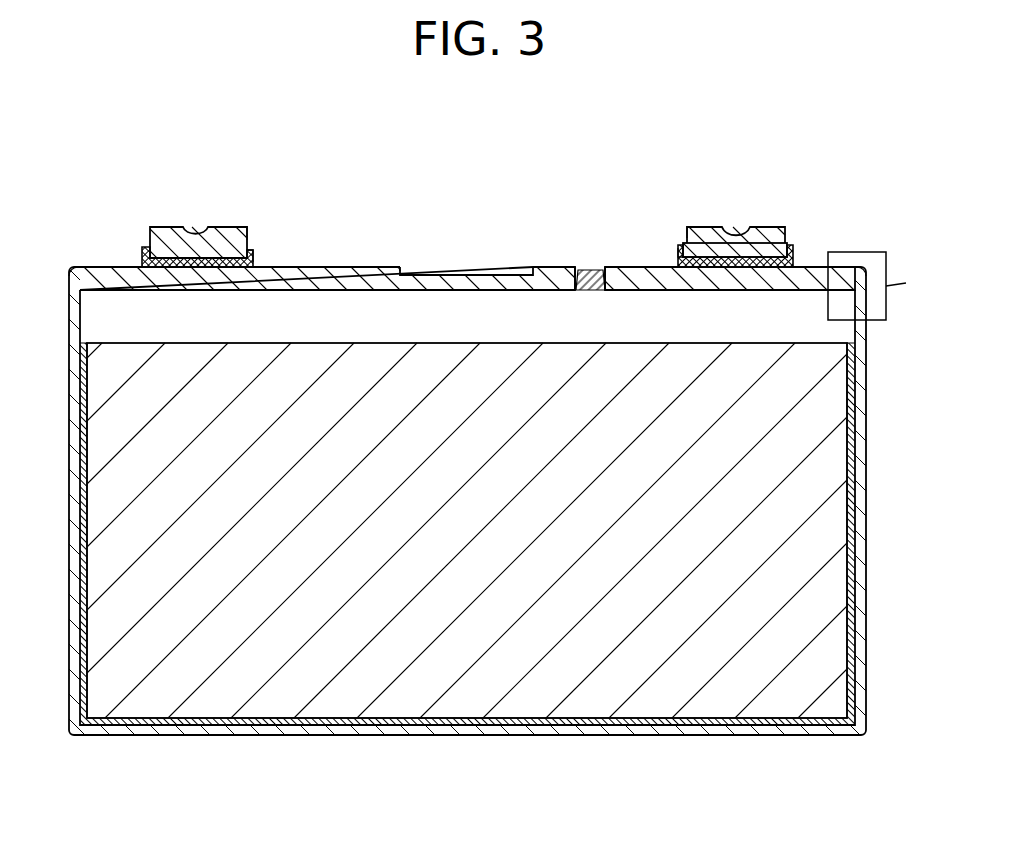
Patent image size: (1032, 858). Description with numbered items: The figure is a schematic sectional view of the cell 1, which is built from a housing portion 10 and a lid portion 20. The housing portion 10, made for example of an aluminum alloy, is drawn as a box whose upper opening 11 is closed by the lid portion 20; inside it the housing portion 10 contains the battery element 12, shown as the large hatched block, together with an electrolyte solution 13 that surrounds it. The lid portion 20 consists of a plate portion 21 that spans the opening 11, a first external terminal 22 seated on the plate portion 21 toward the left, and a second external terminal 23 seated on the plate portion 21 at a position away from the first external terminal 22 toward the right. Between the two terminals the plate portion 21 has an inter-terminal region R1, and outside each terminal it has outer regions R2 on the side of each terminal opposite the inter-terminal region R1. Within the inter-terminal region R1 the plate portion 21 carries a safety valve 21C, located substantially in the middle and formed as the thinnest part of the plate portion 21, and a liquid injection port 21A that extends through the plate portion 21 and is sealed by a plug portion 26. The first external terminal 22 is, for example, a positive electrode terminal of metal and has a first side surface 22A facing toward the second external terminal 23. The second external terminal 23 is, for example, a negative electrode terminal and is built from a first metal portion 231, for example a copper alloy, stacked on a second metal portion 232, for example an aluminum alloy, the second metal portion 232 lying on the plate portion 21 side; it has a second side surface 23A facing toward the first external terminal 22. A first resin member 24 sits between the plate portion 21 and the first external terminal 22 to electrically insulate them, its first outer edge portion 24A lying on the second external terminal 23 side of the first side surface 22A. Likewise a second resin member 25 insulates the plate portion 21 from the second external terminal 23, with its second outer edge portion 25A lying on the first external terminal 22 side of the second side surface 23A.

The cell 1 is at (523, 213).
The housing portion 10 is at (72, 552).
The opening 11 is at (130, 288).
The battery element 12 is at (108, 474).
The electrolyte solution 13 is at (83, 429).
The lid portion 20 is at (328, 238).
The plate portion 21 is at (351, 270).
The liquid injection port 21A is at (577, 275).
The safety valve 21C is at (461, 273).
The first external terminal 22 is at (198, 238).
The first side surface 22A is at (249, 233).
The second external terminal 23 is at (805, 174).
The second side surface 23A is at (691, 240).
The first metal portion 231 is at (712, 238).
The second metal portion 232 is at (766, 247).
The first resin member 24 is at (148, 250).
The first outer edge portion 24A is at (256, 253).
The second resin member 25 is at (794, 262).
The second outer edge portion 25A is at (677, 255).
The plug portion 26 is at (591, 282).
The inter-terminal region R1 is at (382, 266).
The outer regions R2 is at (80, 281).